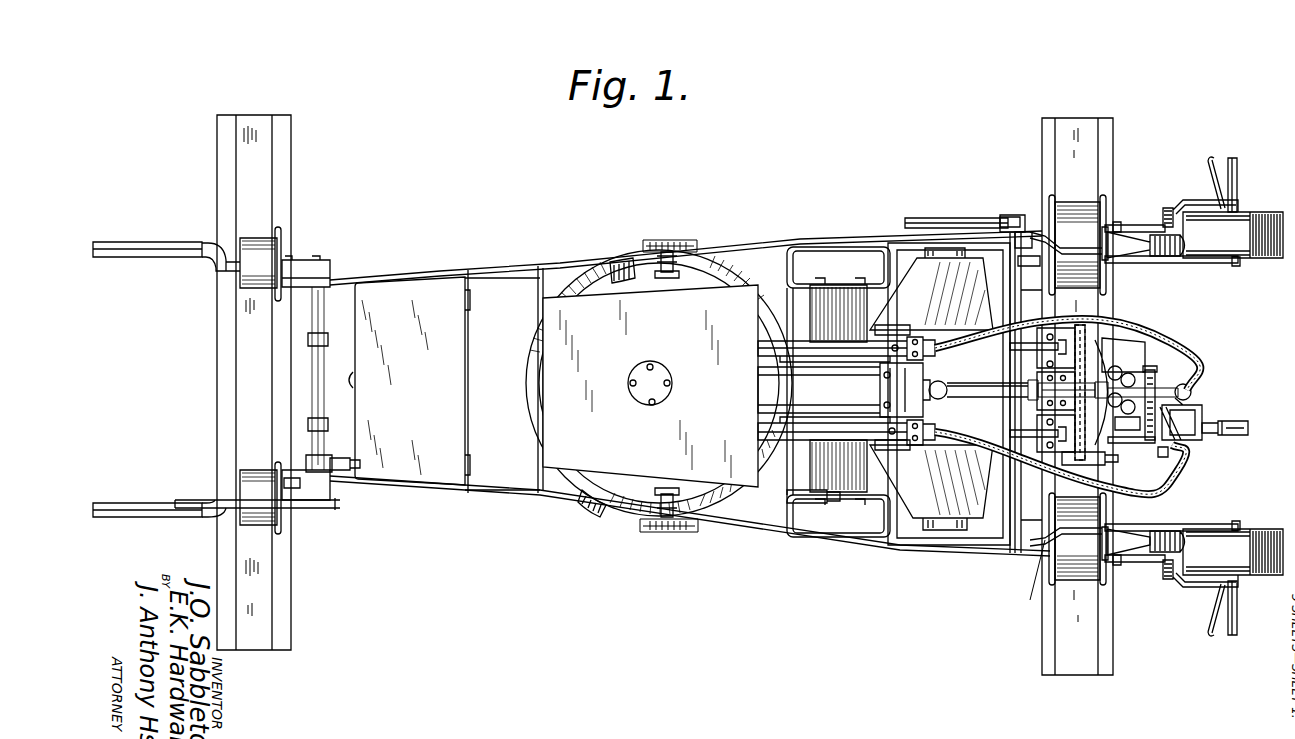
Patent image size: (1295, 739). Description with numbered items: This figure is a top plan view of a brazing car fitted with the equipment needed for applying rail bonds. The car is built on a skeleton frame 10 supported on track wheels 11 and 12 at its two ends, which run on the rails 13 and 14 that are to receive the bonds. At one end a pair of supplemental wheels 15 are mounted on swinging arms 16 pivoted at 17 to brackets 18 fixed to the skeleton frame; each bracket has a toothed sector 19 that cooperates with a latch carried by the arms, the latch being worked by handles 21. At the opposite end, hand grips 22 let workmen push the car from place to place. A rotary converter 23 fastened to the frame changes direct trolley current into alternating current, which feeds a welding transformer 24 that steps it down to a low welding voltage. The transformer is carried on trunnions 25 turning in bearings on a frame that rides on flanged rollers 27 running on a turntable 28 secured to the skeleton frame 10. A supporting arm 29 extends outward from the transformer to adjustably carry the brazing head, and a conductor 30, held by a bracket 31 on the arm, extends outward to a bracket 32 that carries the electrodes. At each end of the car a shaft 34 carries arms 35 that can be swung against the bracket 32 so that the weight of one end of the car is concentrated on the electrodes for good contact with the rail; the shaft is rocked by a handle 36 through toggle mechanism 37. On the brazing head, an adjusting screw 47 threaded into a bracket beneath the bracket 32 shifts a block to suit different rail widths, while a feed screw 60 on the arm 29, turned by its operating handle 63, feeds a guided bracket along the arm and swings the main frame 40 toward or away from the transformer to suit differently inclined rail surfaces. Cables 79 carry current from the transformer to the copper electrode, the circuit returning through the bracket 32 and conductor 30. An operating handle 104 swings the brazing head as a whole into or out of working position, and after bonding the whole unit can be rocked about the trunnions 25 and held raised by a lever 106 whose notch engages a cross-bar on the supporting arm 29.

The skeleton frame 10 is at (492, 270).
The track wheels 11 is at (308, 547).
The track wheels 12 is at (1078, 208).
The rail 13 is at (282, 606).
The rail 14 is at (1075, 638).
The supplemental wheels 15 is at (1233, 393).
The swinging arms 16 is at (1153, 225).
The pivot 17 is at (1118, 224).
The brackets 18 is at (1128, 542).
The toothed sector 19 is at (1148, 244).
The handles 21 is at (1213, 172).
The hand grips 22 is at (180, 236).
The rotary converter 23 is at (931, 389).
The welding transformer 24 is at (659, 383).
The trunnions 25 is at (665, 280).
The flanged rollers 27 is at (612, 262).
The turntable 28 is at (715, 265).
The supporting arm 29 is at (760, 383).
The conductor 30 is at (1090, 376).
The bracket 31 is at (887, 390).
The bracket 32 is at (1062, 376).
The shaft 34 is at (314, 359).
The arms 35 is at (310, 329).
The handle 36 is at (190, 500).
The toggle mechanism 37 is at (334, 458).
The main frame 40 is at (1090, 354).
The adjusting screw 47 is at (1108, 468).
The feed screw 60 is at (1140, 386).
The operating handle 63 is at (1192, 392).
The cables 79 is at (1175, 484).
The operating handle 104 is at (1237, 421).
The lever 106 is at (765, 425).